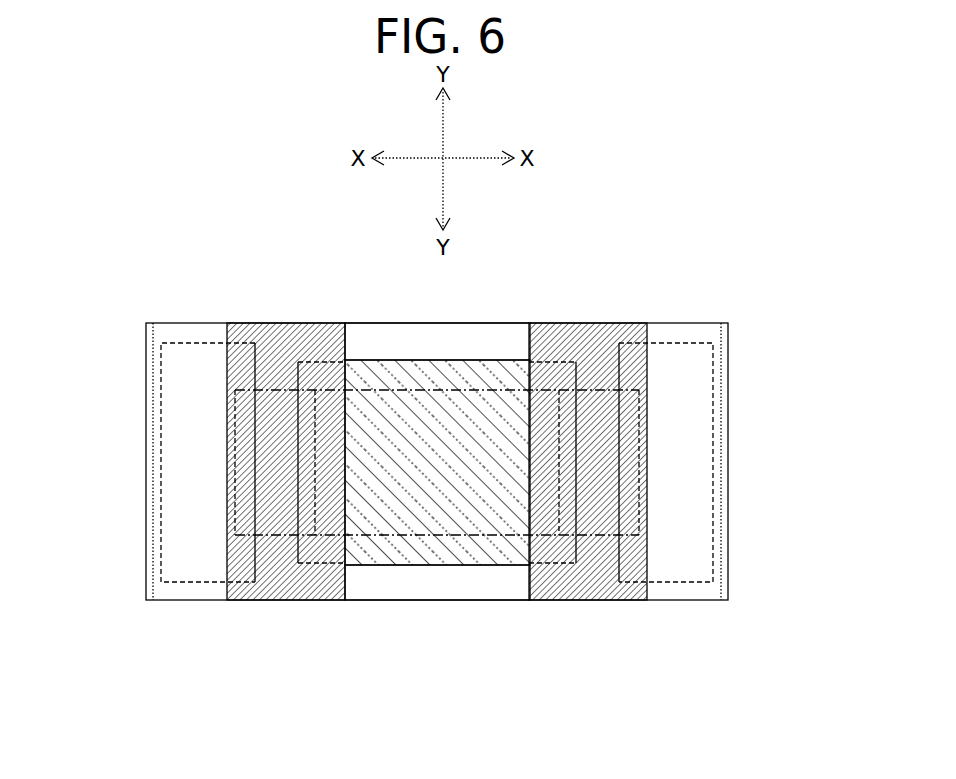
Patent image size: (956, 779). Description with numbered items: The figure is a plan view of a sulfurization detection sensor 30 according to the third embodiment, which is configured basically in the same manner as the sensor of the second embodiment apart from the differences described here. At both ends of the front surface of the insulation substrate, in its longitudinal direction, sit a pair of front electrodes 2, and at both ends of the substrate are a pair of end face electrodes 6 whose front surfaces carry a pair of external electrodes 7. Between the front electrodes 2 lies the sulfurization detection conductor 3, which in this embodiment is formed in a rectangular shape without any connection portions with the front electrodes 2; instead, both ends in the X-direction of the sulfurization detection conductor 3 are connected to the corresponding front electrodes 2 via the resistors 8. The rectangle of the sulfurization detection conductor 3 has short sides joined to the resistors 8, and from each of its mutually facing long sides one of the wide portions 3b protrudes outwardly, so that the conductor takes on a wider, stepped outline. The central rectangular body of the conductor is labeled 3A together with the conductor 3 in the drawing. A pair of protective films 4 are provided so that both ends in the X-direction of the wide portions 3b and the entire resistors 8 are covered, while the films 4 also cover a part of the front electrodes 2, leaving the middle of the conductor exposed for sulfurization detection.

The sulfurization detection sensor 30 is at (722, 298).
The end face electrodes 6 is at (152, 455).
The front electrodes 2 is at (197, 600).
The external electrodes 7 is at (208, 367).
The protective films 4 is at (288, 340).
The resistors 8 is at (280, 537).
The sulfurization detection conductor 3 is at (437, 470).
The wide portions 3b is at (400, 385).
The inner layer portion of element body 3A is at (458, 493).